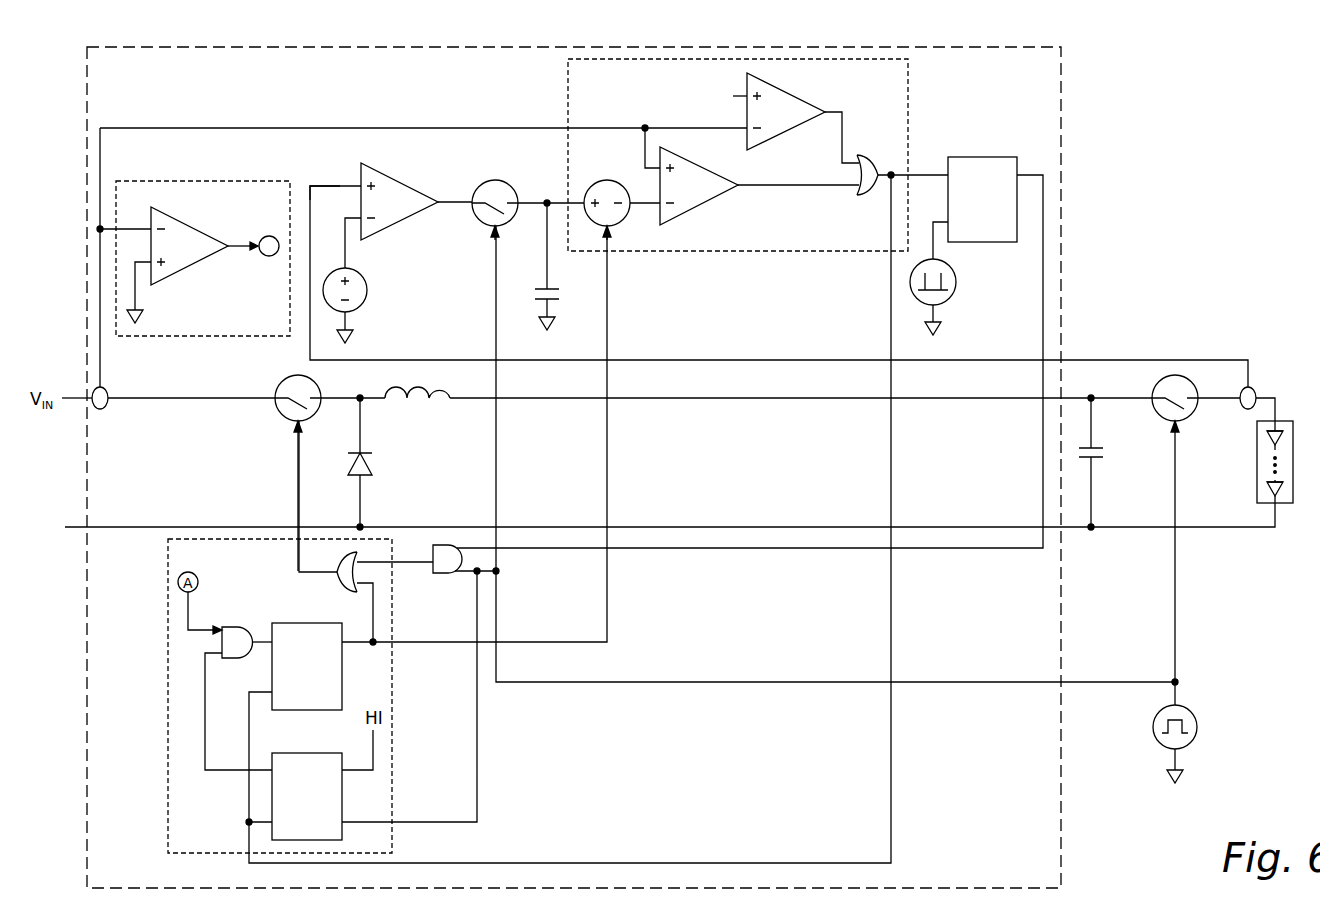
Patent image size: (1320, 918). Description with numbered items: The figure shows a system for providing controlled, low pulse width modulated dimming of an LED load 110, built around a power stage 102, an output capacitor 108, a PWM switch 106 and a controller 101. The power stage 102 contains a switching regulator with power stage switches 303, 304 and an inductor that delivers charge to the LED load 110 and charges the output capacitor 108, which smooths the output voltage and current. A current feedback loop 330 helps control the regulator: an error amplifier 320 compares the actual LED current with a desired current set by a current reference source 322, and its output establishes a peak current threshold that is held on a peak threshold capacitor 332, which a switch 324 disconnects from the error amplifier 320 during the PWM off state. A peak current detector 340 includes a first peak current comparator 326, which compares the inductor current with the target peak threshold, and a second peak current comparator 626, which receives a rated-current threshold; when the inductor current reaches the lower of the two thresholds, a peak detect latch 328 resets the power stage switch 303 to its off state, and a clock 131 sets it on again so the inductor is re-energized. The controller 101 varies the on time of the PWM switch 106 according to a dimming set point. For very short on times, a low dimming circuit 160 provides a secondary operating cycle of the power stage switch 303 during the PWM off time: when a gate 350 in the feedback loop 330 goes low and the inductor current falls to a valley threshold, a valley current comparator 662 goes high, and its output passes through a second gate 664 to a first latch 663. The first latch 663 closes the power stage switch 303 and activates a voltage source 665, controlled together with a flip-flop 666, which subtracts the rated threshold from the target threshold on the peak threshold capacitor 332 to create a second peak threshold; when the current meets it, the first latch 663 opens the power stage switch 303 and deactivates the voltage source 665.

The power stage 102 is at (1061, 172).
The low dimming circuit 160 is at (205, 181).
The valley current comparator 662 is at (196, 224).
The error amplifier 320 is at (405, 178).
The current feedback loop 330 is at (332, 185).
The current reference source 322 is at (367, 290).
The switch 324 is at (495, 180).
The peak threshold capacitor 332 is at (559, 290).
The voltage source 665 is at (624, 221).
The peak current detector 340 is at (908, 81).
The first peak current comparator 326 is at (706, 162).
The second peak current comparator 626 is at (786, 92).
The peak detect latch 328 is at (982, 157).
The clock 131 is at (956, 283).
The power stage switch 303 is at (277, 416).
The power stage switch 304 is at (372, 453).
The output capacitor 108 is at (1103, 448).
The PWM switch 106 is at (1193, 415).
The LED load 110 is at (1257, 472).
The controller 101 is at (1197, 727).
The second gate 664 is at (250, 620).
The first latch 663 is at (320, 623).
The flip-flop 666 is at (320, 753).
The gate 350 is at (437, 573).